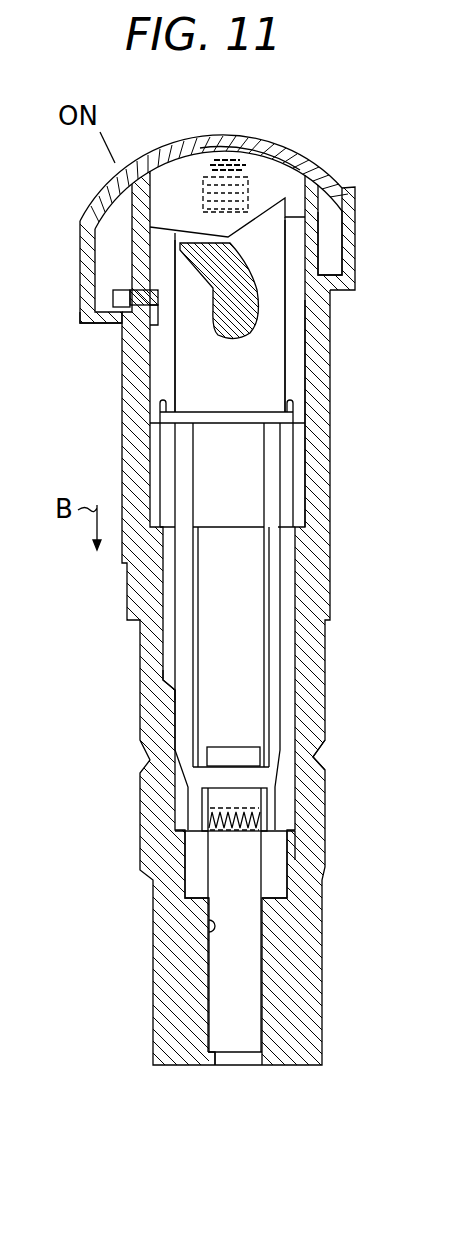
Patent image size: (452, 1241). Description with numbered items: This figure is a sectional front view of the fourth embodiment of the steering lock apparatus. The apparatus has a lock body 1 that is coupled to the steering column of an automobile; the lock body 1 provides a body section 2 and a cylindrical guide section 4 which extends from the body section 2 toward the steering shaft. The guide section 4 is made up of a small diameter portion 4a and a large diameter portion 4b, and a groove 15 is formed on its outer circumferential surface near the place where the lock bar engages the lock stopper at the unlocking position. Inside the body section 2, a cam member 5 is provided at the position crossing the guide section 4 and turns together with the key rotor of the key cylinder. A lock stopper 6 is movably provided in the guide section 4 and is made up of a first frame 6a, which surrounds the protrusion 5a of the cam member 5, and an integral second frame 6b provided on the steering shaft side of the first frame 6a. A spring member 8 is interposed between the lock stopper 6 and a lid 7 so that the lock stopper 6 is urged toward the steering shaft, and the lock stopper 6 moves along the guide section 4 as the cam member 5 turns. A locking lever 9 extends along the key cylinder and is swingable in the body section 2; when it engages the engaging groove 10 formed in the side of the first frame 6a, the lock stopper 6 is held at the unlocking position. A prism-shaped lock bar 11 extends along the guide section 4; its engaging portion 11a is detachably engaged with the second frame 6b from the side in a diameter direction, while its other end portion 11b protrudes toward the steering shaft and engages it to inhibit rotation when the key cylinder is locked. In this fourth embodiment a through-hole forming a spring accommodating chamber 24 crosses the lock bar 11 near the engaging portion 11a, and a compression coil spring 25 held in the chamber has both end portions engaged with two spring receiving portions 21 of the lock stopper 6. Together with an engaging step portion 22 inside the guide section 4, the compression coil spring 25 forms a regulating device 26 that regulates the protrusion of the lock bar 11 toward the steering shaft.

The lock body 1 is at (358, 226).
The body section 2 is at (343, 265).
The guide section 4 is at (326, 657).
The small diameter portion 4a is at (213, 927).
The large diameter portion 4b is at (174, 688).
The cam member 5 is at (243, 306).
The protrusion 5a is at (180, 246).
The lock stopper 6 is at (283, 457).
The first frame 6a is at (298, 362).
The second frame 6b is at (273, 597).
The lid 7 is at (277, 153).
The spring member 8 is at (247, 168).
The locking lever 9 is at (113, 296).
The engaging groove 10 is at (122, 323).
The lock bar 11 is at (254, 966).
The engaging portion 11a is at (253, 766).
The other end portion 11b is at (260, 1068).
The groove 15 is at (314, 754).
The spring receiving portions 21 is at (203, 817).
The engaging step portion 22 is at (175, 828).
The spring accommodating chamber 24 is at (243, 812).
The compression coil spring 25 is at (263, 826).
The shoulder 26 is at (298, 840).